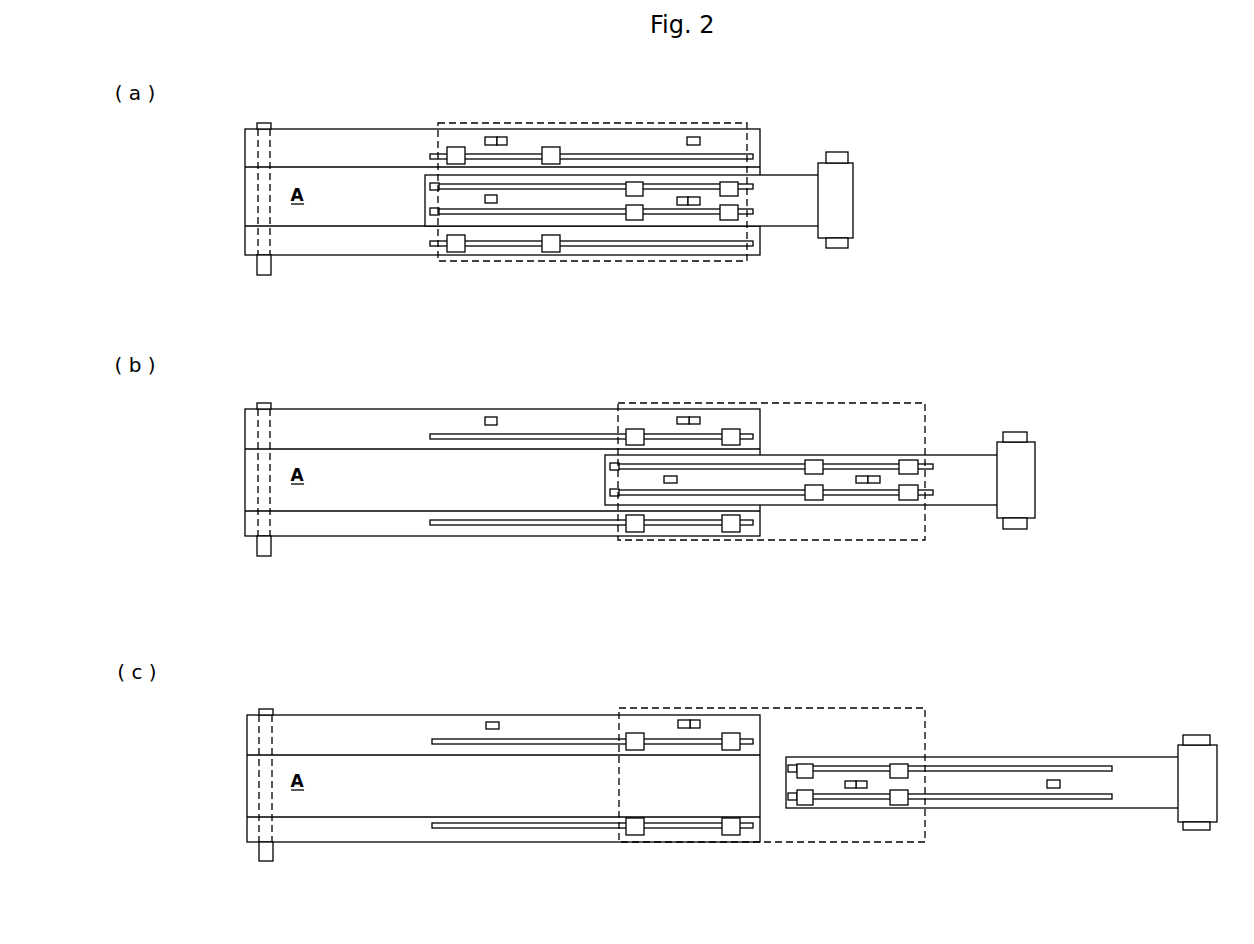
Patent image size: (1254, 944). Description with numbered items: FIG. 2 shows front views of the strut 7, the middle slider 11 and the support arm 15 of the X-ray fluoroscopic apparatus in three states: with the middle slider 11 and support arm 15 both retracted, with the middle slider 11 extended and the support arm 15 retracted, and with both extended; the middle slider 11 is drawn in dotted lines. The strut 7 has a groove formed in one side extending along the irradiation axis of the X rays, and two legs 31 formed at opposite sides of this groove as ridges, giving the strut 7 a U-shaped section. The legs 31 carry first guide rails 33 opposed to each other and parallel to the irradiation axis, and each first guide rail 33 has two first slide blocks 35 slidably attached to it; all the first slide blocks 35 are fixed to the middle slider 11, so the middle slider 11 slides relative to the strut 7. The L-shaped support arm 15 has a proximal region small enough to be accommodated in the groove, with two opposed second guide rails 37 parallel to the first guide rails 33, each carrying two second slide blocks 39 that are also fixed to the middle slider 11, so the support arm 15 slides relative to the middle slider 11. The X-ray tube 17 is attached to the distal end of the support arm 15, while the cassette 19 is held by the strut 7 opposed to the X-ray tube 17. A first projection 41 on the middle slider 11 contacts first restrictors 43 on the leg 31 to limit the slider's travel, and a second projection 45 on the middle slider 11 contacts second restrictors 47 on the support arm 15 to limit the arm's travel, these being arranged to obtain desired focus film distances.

The strut 7 is at (233, 129).
The middle slider 11 is at (742, 123).
The support arm 15 is at (775, 176).
The X-ray tube 17 is at (838, 152).
The cassette 19 is at (271, 270).
The legs 31 is at (310, 160).
The first guide rails 33 is at (430, 156).
The first slide blocks 35 is at (454, 147).
The second guide rails 37 is at (430, 211).
The second slide blocks 39 is at (626, 190).
The first projection 41 is at (503, 137).
The first restrictors 43 is at (490, 137).
The second projection 45 is at (681, 205).
The second restrictors 47 is at (491, 203).